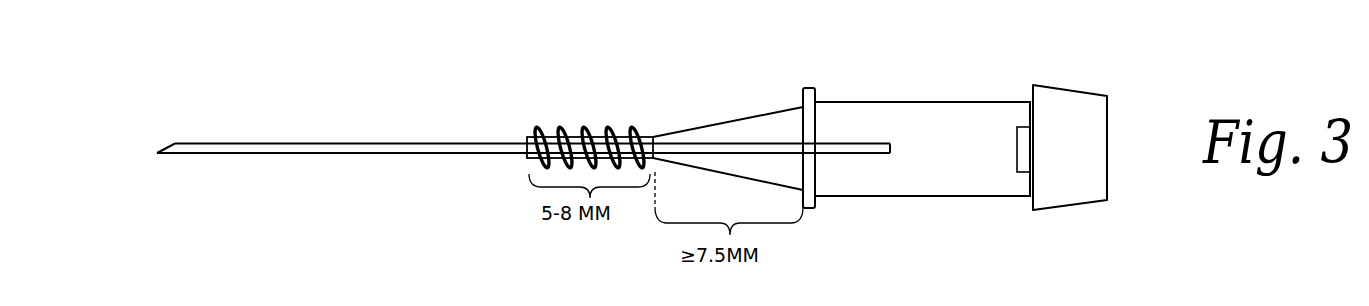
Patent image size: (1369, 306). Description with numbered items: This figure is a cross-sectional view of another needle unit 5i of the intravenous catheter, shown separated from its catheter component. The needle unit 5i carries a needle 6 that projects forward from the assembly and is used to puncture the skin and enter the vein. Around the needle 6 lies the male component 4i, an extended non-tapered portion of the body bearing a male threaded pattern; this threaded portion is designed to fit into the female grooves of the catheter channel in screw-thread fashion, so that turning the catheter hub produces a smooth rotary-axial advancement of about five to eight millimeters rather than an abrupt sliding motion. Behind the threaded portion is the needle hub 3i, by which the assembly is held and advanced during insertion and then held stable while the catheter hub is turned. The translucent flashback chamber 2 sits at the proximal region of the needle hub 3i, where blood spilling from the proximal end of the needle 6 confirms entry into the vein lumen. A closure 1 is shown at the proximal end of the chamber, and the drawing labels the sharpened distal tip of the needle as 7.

The cap 1 is at (1085, 146).
The flashback chamber 2 is at (965, 176).
The needle hub 3i is at (1030, 102).
The male component 4i is at (803, 107).
The needle unit 5i is at (1028, 67).
The needle 6 is at (892, 147).
The needle 7 is at (173, 144).